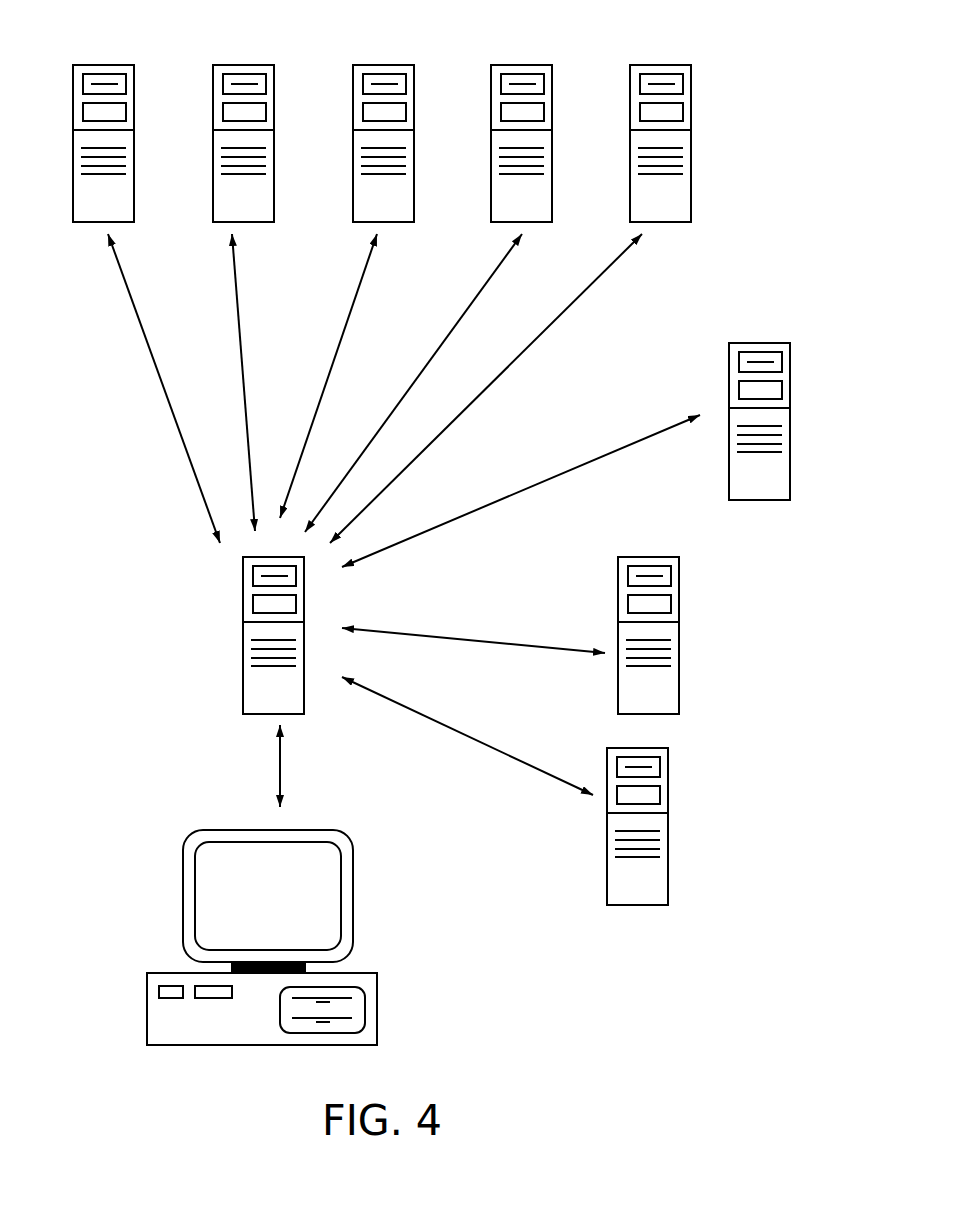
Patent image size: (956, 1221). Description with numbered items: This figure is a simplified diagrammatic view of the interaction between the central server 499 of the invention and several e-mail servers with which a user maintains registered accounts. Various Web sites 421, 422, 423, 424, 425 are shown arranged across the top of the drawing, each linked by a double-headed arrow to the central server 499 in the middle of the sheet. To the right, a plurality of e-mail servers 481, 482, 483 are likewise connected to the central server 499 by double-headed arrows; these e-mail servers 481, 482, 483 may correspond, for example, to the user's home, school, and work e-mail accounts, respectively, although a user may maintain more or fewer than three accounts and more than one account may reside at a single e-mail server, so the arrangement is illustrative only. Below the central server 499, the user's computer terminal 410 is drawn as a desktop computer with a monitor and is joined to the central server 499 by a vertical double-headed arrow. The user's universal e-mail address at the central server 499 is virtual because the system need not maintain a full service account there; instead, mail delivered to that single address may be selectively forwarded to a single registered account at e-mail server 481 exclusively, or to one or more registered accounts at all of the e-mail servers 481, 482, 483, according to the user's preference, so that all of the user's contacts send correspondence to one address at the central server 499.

The Web site 421 is at (110, 64).
The Web site 422 is at (250, 64).
The Web site 423 is at (390, 64).
The Web site 424 is at (528, 64).
The Web site 425 is at (680, 64).
The e-mail server 481 is at (780, 341).
The e-mail server 482 is at (689, 640).
The e-mail server 483 is at (675, 817).
The central server 499 is at (217, 625).
The computer terminal 410 is at (403, 925).